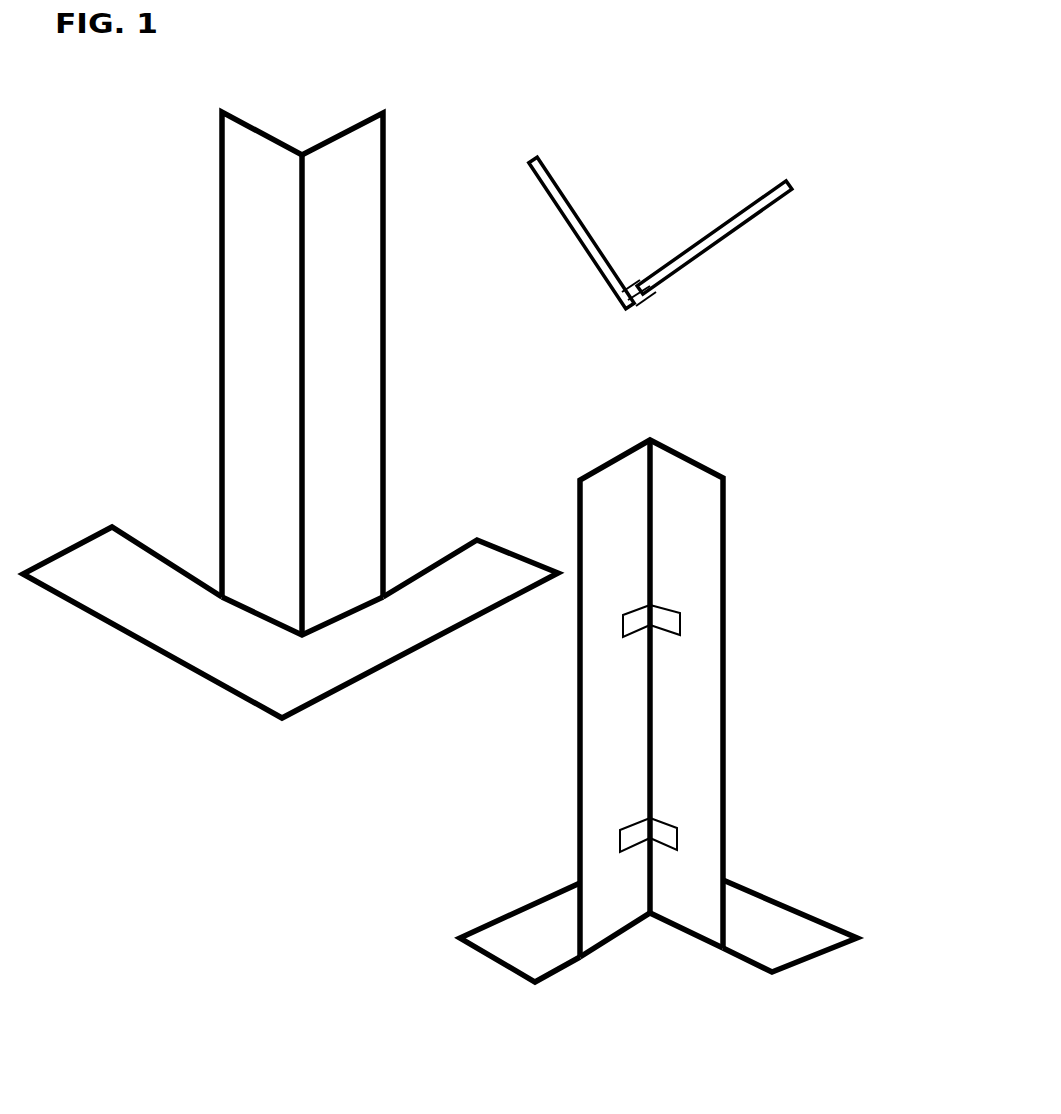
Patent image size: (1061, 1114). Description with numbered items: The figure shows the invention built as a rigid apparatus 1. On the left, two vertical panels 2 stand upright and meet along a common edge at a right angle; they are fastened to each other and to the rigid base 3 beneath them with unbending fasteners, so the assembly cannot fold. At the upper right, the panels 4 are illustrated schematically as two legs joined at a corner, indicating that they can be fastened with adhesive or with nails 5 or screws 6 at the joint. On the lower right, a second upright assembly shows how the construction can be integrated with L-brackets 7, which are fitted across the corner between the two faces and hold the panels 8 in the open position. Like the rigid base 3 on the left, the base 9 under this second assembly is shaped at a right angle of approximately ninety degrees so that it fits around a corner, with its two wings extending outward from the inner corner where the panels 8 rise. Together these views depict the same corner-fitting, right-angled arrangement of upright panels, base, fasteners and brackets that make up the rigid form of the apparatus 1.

The rigid apparatus 1 is at (258, 173).
The vertical panels 2 is at (283, 323).
The rigid base 3 is at (217, 612).
The panels 4 is at (535, 152).
The nails 5 is at (637, 298).
The screws 6 is at (620, 263).
The L-brackets 7 is at (670, 610).
The panels 8 is at (598, 577).
The base 9 is at (527, 935).